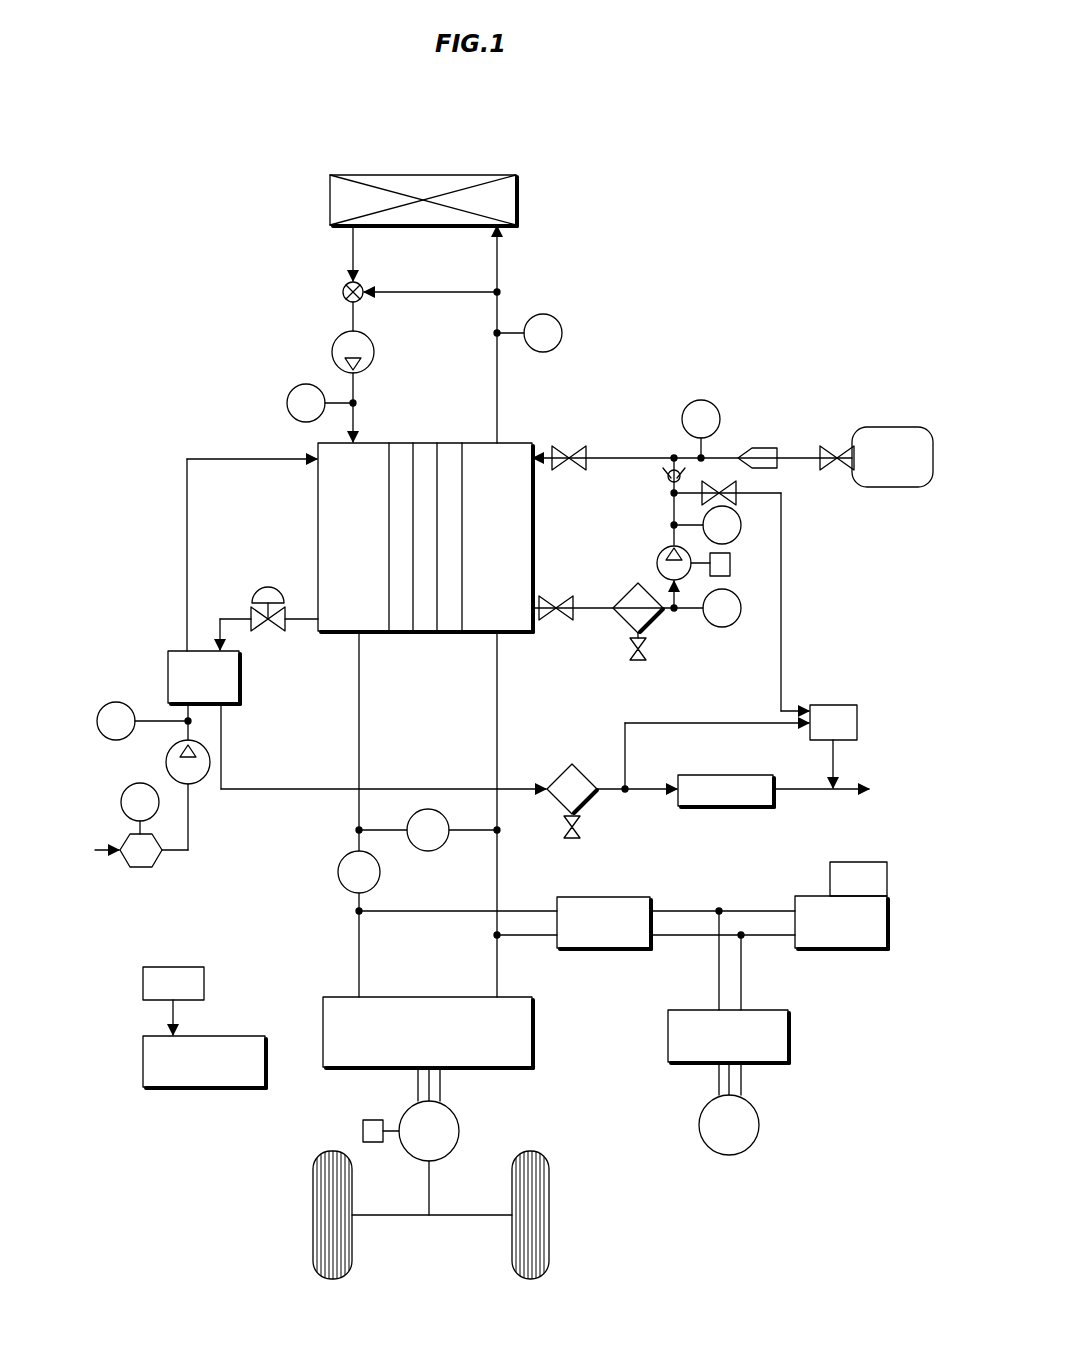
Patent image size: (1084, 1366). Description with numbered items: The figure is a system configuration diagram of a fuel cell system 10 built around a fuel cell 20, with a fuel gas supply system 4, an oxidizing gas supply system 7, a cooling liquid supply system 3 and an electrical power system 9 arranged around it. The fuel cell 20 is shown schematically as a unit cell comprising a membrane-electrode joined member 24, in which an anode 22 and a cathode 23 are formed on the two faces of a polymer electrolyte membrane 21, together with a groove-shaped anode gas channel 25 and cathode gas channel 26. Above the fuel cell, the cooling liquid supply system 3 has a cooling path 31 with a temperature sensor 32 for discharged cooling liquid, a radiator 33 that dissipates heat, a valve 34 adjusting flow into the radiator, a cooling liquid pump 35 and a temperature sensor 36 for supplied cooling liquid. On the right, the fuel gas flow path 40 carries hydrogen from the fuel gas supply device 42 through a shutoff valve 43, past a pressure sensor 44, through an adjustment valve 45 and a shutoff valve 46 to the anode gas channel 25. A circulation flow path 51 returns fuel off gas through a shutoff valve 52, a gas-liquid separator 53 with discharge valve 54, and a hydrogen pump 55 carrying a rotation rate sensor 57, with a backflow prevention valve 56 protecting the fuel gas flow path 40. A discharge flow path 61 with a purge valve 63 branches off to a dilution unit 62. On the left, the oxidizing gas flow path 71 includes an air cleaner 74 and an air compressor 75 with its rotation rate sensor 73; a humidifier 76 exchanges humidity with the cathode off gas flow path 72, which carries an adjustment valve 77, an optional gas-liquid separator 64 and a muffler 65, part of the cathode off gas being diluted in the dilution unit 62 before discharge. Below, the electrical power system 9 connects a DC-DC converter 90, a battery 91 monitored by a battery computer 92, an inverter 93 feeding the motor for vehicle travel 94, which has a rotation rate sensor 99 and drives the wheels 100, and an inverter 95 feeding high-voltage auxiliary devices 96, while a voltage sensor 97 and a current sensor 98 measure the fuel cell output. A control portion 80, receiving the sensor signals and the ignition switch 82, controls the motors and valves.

The cooling liquid supply system 3 is at (433, 359).
The fuel gas supply system 4 is at (568, 517).
The oxidizing gas supply system 7 is at (222, 504).
The electrical power system 9 is at (436, 964).
The fuel cell system 10 is at (751, 226).
The fuel cell 20 is at (428, 550).
The polymer electrolyte membrane 21 is at (430, 637).
The anode 22 is at (451, 637).
The cathode 23 is at (405, 637).
The membrane-electrode joined member 24 is at (480, 677).
The anode gas channel 25 is at (512, 635).
The cathode gas channel 26 is at (335, 633).
The cooling path 31 is at (500, 395).
The temperature sensor 32 is at (546, 314).
The radiator 33 is at (516, 205).
The valve 34 is at (343, 290).
The cooling liquid pump 35 is at (332, 350).
The temperature sensor 36 is at (288, 392).
The fuel gas flow path 40 is at (625, 457).
The fuel gas supply device 42 is at (895, 428).
The shutoff valve 43 is at (833, 447).
The pressure sensor 44 is at (690, 402).
The adjustment valve 45 is at (752, 448).
The shutoff valve 46 is at (566, 447).
The circulation flow path 51 is at (580, 618).
The shutoff valve 52 is at (556, 600).
The gas-liquid separator 53 is at (626, 595).
The discharge valve 54 is at (640, 660).
The hydrogen pump 55 is at (664, 552).
The backflow prevention valve 56 is at (665, 483).
The rotation rate sensor 57 is at (730, 565).
The discharge flow path 61 is at (783, 565).
The dilution unit 62 is at (830, 705).
The purge valve 63 is at (740, 488).
The gas-liquid separator 64 is at (590, 810).
The muffler 65 is at (740, 806).
The oxidizing gas flow path 71 is at (198, 459).
The cathode off gas flow path 72 is at (300, 617).
The rotation rate sensor 73 is at (110, 702).
The air cleaner 74 is at (140, 868).
The air compressor 75 is at (205, 785).
The humidifier 76 is at (168, 652).
The adjustment valve 77 is at (268, 588).
The control portion 80 is at (220, 1036).
The ignition switch 82 is at (204, 975).
The DC-DC converter 90 is at (580, 897).
The battery 91 is at (805, 896).
The battery computer 92 is at (870, 862).
The inverter 93 is at (532, 1035).
The motor for vehicle travel 94 is at (460, 1130).
The inverter 95 is at (788, 1040).
The high-voltage auxiliary devices 96 is at (760, 1130).
The voltage sensor 97 is at (440, 845).
The current sensor 98 is at (380, 875).
The rotation rate sensor 99 is at (363, 1131).
The wheels 100 is at (549, 1180).